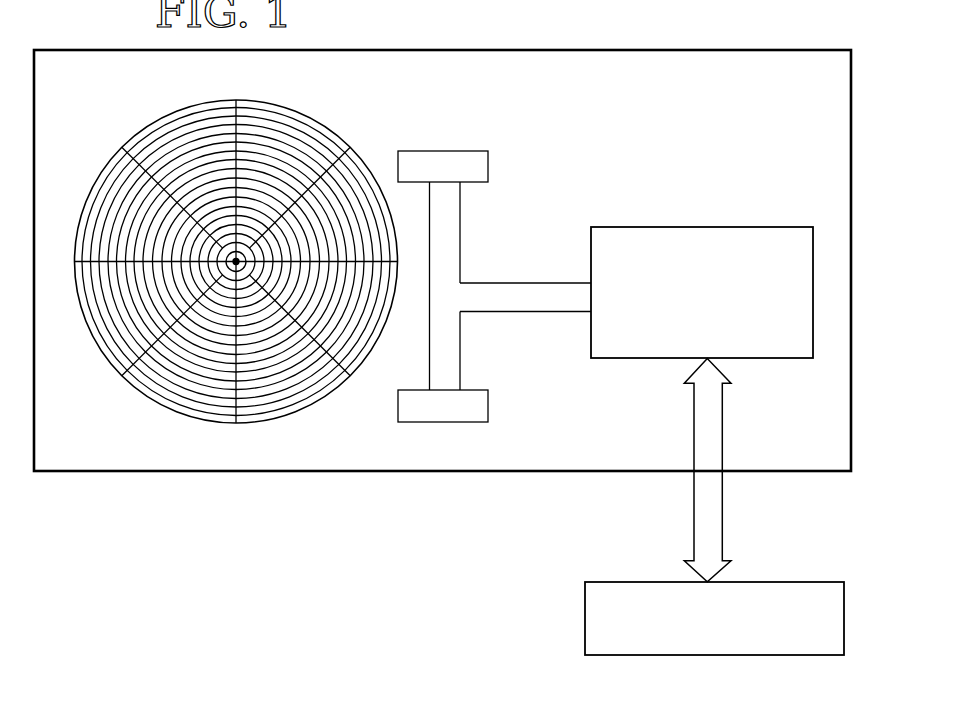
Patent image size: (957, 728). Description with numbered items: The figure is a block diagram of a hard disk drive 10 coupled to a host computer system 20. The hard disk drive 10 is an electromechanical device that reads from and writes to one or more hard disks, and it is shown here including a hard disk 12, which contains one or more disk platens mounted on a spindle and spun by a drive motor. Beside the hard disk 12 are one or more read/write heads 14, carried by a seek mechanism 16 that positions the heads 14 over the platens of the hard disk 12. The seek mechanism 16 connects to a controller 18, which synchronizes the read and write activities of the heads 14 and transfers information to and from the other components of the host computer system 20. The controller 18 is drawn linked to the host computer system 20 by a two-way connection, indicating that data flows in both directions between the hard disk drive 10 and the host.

The hard disk drive 10 is at (310, 503).
The hard disk 12 is at (333, 135).
The read/write heads 14 is at (467, 151).
The seek mechanism 16 is at (530, 283).
The controller 18 is at (725, 227).
The host computer system 20 is at (743, 655).